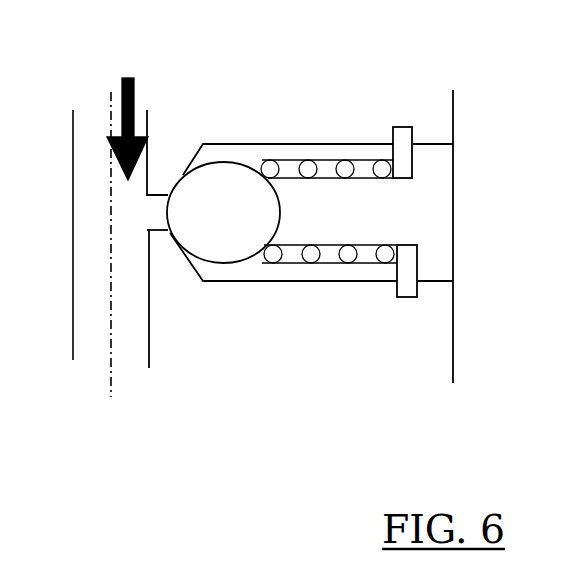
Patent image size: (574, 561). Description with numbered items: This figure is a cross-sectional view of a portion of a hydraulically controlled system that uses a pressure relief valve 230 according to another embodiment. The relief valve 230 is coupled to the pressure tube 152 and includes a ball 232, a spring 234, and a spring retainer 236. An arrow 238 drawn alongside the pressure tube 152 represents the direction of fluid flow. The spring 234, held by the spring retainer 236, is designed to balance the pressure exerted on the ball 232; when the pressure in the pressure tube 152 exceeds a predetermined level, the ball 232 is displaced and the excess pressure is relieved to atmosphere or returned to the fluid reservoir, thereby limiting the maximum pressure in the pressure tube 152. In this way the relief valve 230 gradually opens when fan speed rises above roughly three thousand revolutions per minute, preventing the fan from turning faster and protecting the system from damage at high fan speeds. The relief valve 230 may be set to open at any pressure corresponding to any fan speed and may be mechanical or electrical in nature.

The pressure tube 152 is at (73, 360).
The pressure relief valve 230 is at (342, 212).
The ball 232 is at (243, 262).
The spring 234 is at (325, 265).
The spring retainer 236 is at (405, 297).
The arrow 238 is at (122, 89).